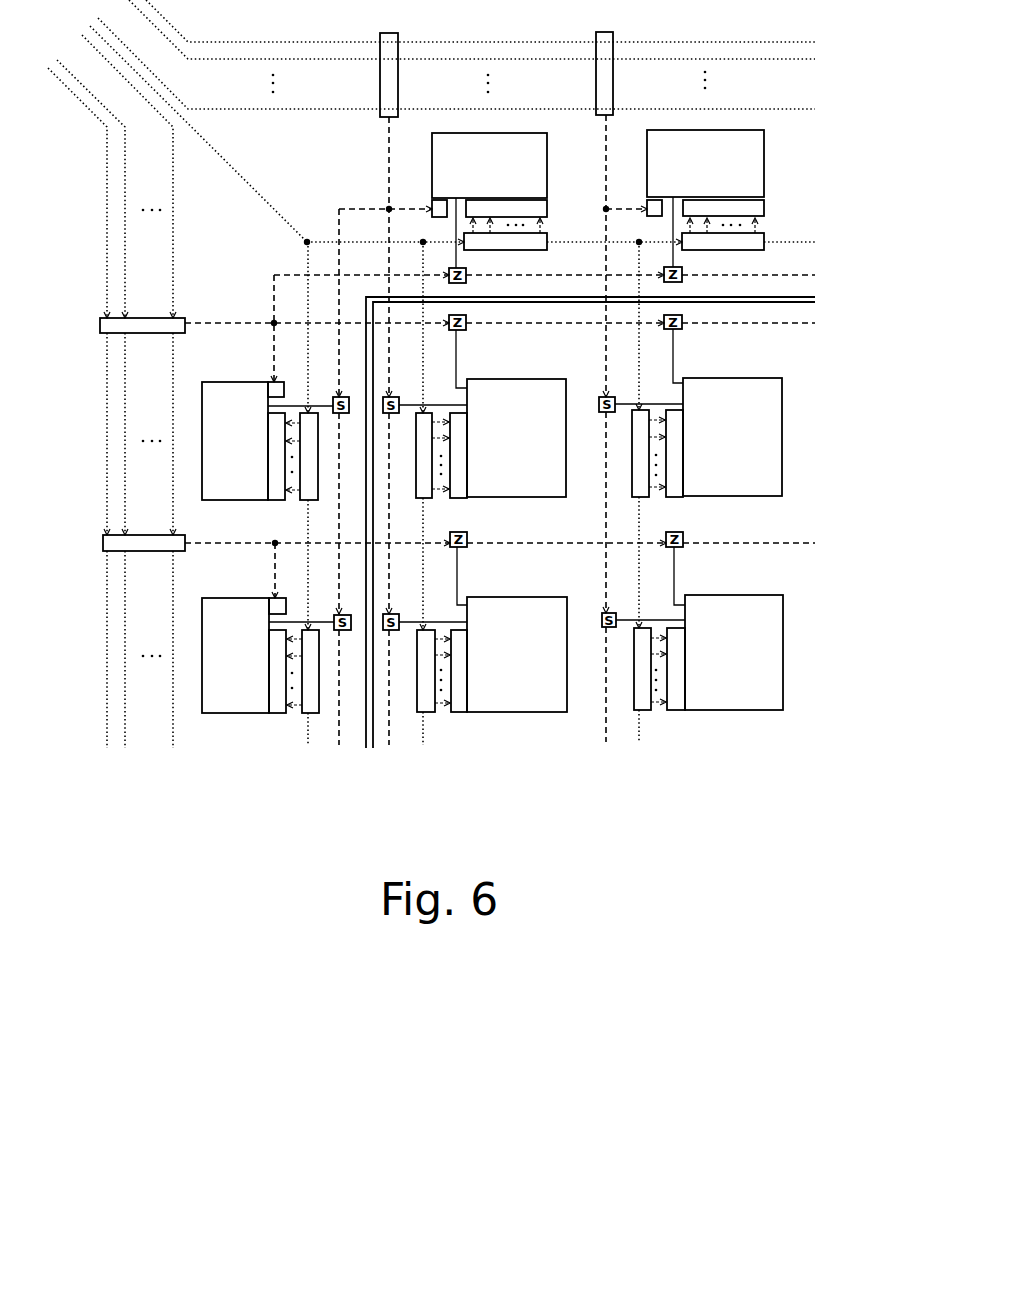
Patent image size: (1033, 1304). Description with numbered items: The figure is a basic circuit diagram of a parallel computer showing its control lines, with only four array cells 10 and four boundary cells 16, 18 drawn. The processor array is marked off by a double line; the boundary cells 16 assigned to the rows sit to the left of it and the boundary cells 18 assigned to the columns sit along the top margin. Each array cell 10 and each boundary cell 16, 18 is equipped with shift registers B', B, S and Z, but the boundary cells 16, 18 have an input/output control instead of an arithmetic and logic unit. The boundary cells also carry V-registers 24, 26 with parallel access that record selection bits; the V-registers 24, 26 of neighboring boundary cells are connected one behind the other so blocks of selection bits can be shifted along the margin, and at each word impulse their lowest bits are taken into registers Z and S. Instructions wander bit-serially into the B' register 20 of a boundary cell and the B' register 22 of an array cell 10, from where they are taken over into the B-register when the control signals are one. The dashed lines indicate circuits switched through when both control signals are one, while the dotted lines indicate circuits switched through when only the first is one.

The array cell 10 is at (508, 421).
The boundary cell 16 is at (242, 413).
The boundary cell 18 is at (458, 173).
The B' register of boundary cell 20 is at (310, 490).
The B' register of array cell 22 is at (427, 487).
The V-register 24 is at (388, 42).
The V-register 26 is at (173, 323).